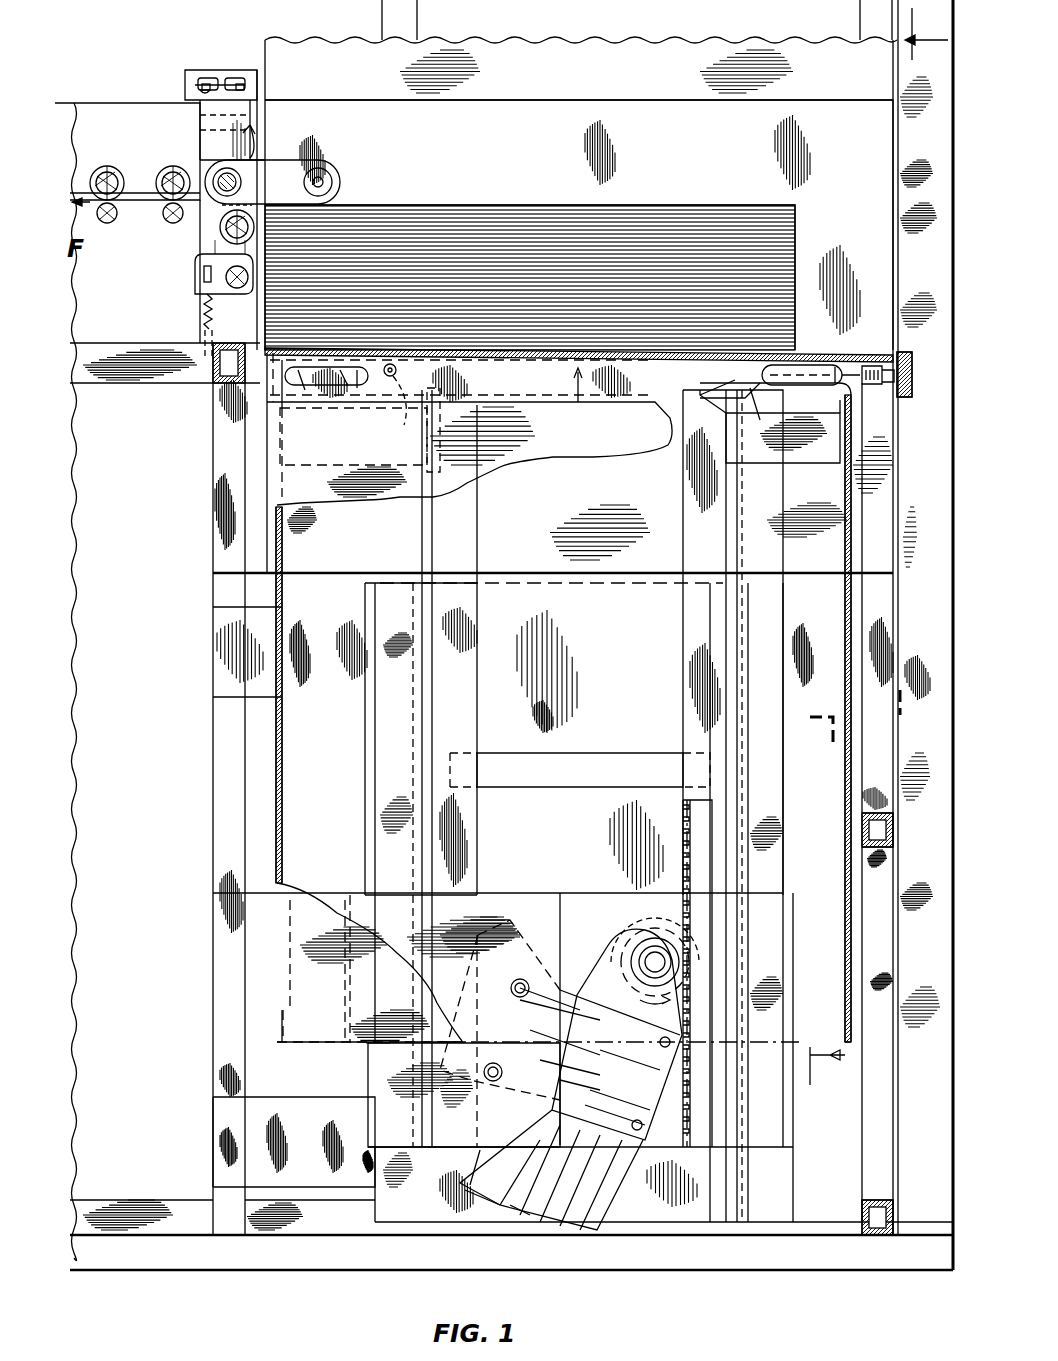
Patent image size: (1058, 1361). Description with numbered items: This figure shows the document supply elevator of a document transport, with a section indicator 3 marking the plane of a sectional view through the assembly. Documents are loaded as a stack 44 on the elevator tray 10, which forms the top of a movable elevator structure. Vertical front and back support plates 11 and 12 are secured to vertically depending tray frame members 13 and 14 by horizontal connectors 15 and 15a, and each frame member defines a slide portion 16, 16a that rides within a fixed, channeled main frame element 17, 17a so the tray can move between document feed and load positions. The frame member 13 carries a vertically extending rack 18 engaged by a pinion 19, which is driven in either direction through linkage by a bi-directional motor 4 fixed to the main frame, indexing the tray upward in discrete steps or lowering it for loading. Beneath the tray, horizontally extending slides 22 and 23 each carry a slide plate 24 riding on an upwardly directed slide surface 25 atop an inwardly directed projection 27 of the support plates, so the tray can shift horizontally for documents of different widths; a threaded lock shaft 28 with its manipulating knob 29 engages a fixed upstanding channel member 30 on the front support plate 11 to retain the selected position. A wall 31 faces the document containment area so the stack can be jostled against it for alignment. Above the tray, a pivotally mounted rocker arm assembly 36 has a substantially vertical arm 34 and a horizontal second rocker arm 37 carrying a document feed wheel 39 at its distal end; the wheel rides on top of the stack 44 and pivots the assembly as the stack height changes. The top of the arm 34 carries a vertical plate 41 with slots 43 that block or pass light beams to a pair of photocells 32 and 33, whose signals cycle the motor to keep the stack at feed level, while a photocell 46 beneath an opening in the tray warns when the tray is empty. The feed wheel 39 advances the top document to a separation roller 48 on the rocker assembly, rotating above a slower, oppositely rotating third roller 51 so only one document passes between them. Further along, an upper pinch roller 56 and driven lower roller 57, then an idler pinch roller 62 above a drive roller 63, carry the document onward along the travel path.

The section line 3- 3 is at (879, 549).
The electric motor 4 is at (616, 1178).
The elevator tray 10 is at (860, 362).
The front support plate 11 is at (852, 505).
The back support plate 12 is at (276, 552).
The tray frame member 13 is at (712, 518).
The tray frame member 14 is at (468, 538).
The horizontal connector 15 is at (795, 450).
The horizontal connector 15a is at (326, 448).
The slide portion 16 is at (730, 557).
The slide portion 16a is at (426, 550).
The main frame element 17 is at (780, 790).
The main frame element 17a is at (382, 768).
The rack 18 is at (695, 860).
The pinion 19 is at (650, 932).
The slide 22 is at (822, 350).
The slide 23 is at (304, 396).
The slide plate 24 is at (765, 382).
The slide surface 25 is at (344, 387).
The projection 27 is at (358, 389).
The threaded lock shaft 28 is at (860, 368).
The manipulating knob 29 is at (910, 353).
The channel member 30 is at (876, 404).
The wall 31 is at (704, 166).
The photocell 32 is at (238, 78).
The photocell 33 is at (206, 80).
The vertical arm 34 is at (218, 125).
The rocker arm assembly 36 is at (274, 152).
The second rocker arm 37 is at (303, 172).
The document feed wheel 39 is at (340, 178).
The vertical plate 41 is at (195, 92).
The slots 43 is at (200, 84).
The stack 44 is at (503, 205).
The photocell 46 is at (405, 410).
The separation roller 48 is at (220, 215).
The third roller 51 is at (225, 240).
The pinch roller 56 is at (172, 171).
The lower roller 57 is at (172, 223).
The idler pinch roller 62 is at (103, 180).
The drive roller 63 is at (102, 224).